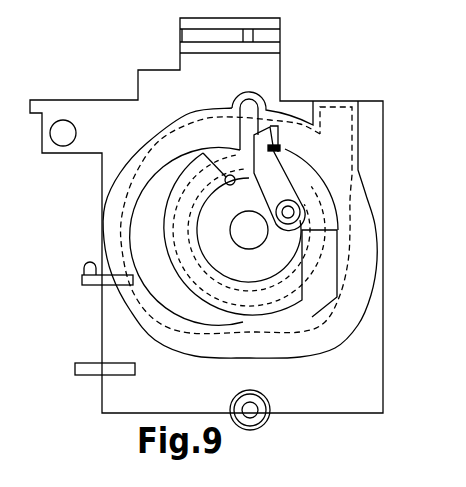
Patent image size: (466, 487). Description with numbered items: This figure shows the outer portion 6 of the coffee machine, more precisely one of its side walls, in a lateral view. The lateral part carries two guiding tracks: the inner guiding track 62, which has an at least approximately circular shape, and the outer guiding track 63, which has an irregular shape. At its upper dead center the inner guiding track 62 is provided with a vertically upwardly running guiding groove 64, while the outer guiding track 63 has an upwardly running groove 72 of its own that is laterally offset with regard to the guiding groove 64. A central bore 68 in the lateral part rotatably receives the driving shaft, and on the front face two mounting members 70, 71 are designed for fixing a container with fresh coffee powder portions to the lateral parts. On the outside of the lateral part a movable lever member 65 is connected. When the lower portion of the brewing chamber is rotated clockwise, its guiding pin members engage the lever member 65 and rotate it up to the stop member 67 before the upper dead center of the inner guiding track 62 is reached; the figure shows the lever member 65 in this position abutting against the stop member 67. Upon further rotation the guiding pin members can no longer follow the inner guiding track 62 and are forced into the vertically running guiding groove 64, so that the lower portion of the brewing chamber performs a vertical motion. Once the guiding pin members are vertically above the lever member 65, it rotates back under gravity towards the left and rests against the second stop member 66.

The outer portion 6 is at (252, 70).
The inner guiding track 62 is at (200, 280).
The outer guiding track 63 is at (293, 345).
The guiding groove 64 is at (247, 118).
The lever member 65 is at (270, 190).
The second stop member 66 is at (228, 186).
The stop member 67 is at (268, 147).
The central bore 68 is at (240, 236).
The mounting member 70 is at (85, 272).
The mounting member 71 is at (78, 375).
The groove 72 is at (340, 123).